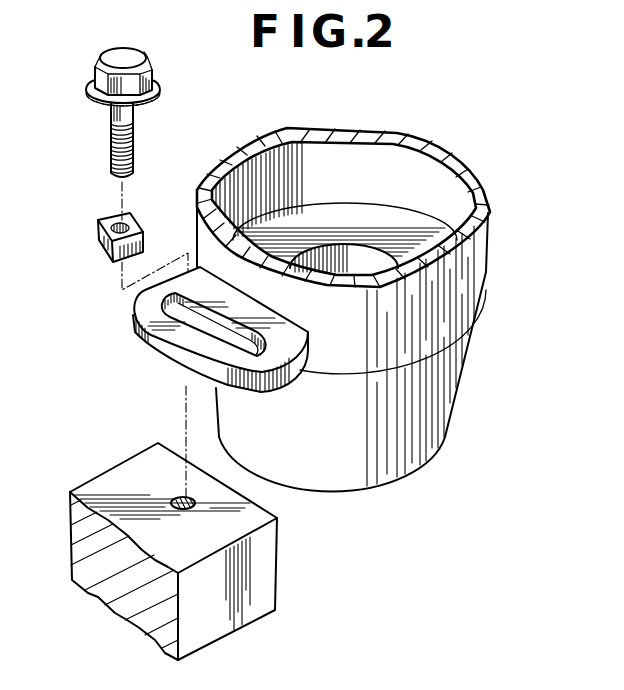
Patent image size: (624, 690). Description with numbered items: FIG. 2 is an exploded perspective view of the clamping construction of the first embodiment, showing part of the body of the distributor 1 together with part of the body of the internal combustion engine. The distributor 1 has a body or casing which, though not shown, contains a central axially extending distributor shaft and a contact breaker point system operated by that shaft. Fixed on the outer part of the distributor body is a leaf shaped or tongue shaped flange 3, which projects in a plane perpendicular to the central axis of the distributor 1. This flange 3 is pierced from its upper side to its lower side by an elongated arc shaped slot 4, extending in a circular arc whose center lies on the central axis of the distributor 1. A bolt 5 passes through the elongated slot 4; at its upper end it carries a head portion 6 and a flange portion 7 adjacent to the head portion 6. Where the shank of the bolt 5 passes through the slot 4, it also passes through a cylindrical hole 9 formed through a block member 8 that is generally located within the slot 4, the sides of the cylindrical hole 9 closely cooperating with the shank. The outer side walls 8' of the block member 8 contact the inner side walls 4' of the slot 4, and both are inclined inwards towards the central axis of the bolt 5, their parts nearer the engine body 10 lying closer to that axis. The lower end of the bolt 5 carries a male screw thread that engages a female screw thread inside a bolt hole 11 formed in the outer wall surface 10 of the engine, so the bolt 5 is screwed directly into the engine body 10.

The distributor 1 is at (478, 241).
The flange 3 is at (286, 366).
The elongated arc shaped slot 4 is at (214, 306).
The inner side walls of the elongated slot 4' is at (214, 314).
The bolt 5 is at (112, 148).
The head portion 6 is at (124, 53).
The flange portion 7 is at (157, 82).
The block member 8 is at (132, 237).
The outer side walls of the block member 8' is at (93, 257).
The cylindrical hole 9 is at (126, 225).
The outer wall surface of the internal combustion engine 10 is at (270, 544).
The bolt hole 11 is at (186, 499).